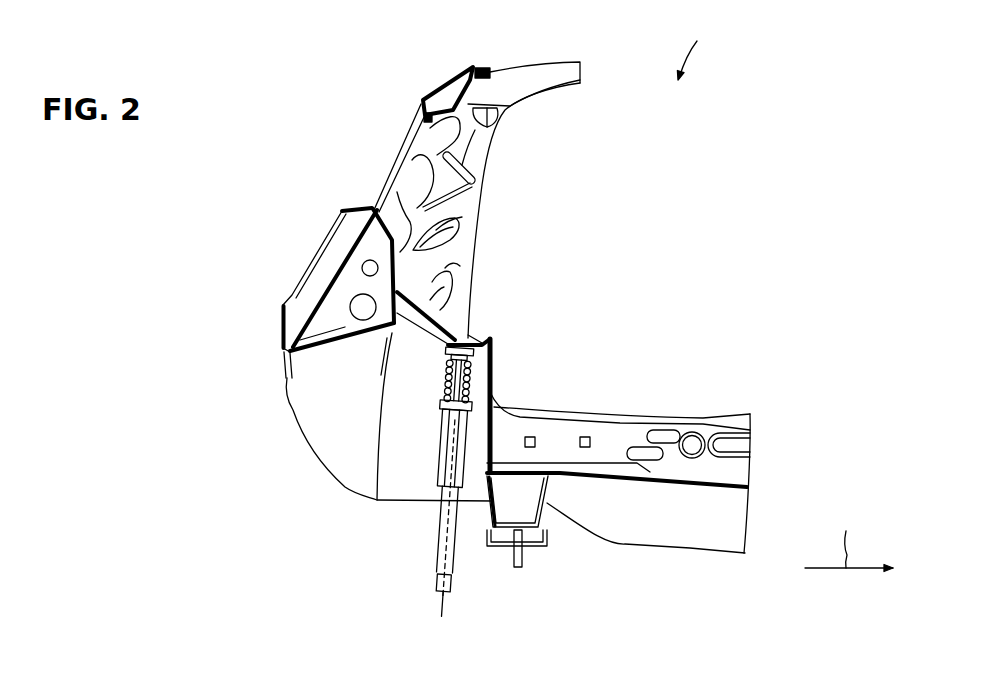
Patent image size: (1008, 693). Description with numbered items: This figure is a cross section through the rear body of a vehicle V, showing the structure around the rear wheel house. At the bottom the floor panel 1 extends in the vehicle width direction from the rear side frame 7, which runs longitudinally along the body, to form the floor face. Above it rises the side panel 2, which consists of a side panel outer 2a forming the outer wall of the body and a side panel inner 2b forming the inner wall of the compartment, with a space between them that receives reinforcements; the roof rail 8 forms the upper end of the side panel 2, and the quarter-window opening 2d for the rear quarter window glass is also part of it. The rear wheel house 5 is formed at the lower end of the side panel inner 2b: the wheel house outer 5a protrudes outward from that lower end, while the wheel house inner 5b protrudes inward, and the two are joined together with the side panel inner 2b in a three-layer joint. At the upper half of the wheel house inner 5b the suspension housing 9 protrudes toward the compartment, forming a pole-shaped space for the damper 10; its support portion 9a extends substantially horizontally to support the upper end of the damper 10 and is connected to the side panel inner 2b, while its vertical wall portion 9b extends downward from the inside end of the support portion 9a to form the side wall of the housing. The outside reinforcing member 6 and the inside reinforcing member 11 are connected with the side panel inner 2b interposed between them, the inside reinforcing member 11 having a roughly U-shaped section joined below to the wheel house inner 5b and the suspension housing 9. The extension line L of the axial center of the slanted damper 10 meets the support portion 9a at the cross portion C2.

The floor panel 1 is at (684, 485).
The side panel 2 is at (313, 243).
The side panel outer 2a is at (355, 207).
The side panel inner 2b is at (438, 229).
The quarter-window opening 2d is at (422, 113).
The rear wheel house 5 is at (348, 385).
The wheel house outer 5a is at (330, 345).
The wheel house inner 5b is at (402, 348).
The outside reinforcing member 6 is at (310, 305).
The rear side frame 7 is at (547, 503).
The roof rail 8 is at (453, 74).
The suspension housing 9 is at (494, 380).
The support portion 9a is at (479, 338).
The vertical wall portion 9b is at (497, 400).
The damper 10 is at (440, 522).
The inside reinforcing member 11 is at (451, 272).
The cross portion C2 is at (464, 336).
The extension line L is at (437, 602).
The vehicle V is at (694, 49).